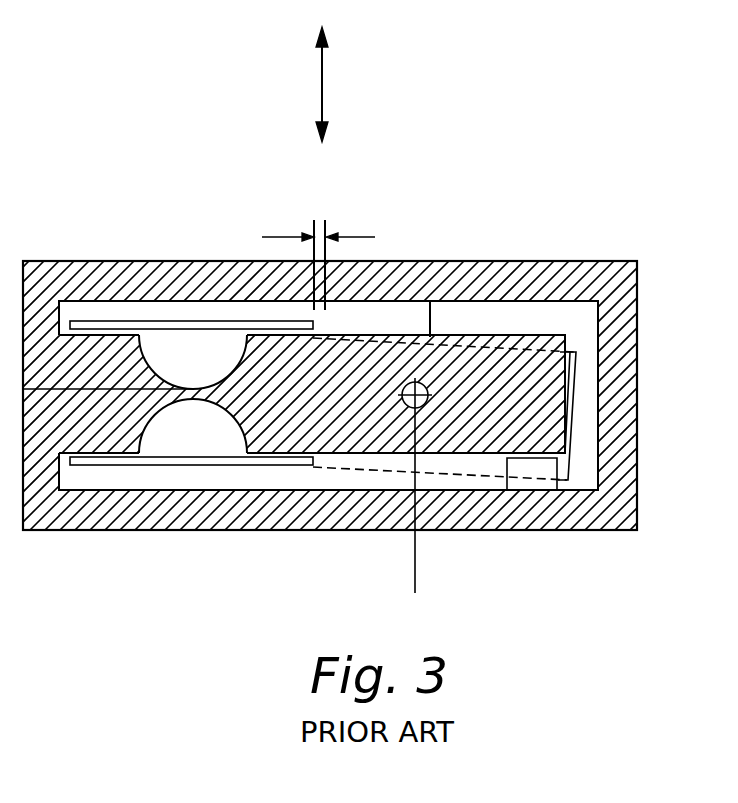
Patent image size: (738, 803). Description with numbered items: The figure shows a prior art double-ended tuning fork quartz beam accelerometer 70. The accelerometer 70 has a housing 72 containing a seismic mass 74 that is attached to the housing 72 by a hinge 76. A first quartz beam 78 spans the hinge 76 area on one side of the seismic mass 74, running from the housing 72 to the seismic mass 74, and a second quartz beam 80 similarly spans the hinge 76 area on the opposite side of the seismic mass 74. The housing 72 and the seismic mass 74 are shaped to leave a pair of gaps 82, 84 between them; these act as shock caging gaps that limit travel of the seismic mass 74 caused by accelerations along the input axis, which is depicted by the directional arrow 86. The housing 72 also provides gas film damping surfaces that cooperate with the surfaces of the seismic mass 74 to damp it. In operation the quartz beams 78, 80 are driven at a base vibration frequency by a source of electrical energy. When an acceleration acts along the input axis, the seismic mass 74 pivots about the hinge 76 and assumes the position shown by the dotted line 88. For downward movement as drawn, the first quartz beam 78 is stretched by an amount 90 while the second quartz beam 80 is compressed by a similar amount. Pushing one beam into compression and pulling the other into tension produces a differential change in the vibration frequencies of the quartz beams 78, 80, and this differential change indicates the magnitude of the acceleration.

The double-ended tuning fork quartz beam accelerometer 70 is at (441, 167).
The housing 72 is at (510, 262).
The seismic mass 74 is at (558, 458).
The hinge 76 is at (193, 399).
The first quartz beam 78 is at (122, 321).
The second quartz beam 80 is at (213, 400).
The gap 82 is at (428, 318).
The gap 84 is at (511, 472).
The directional arrow 86 is at (322, 77).
The dotted line 88 is at (577, 375).
The amount of stretch 90 is at (352, 237).